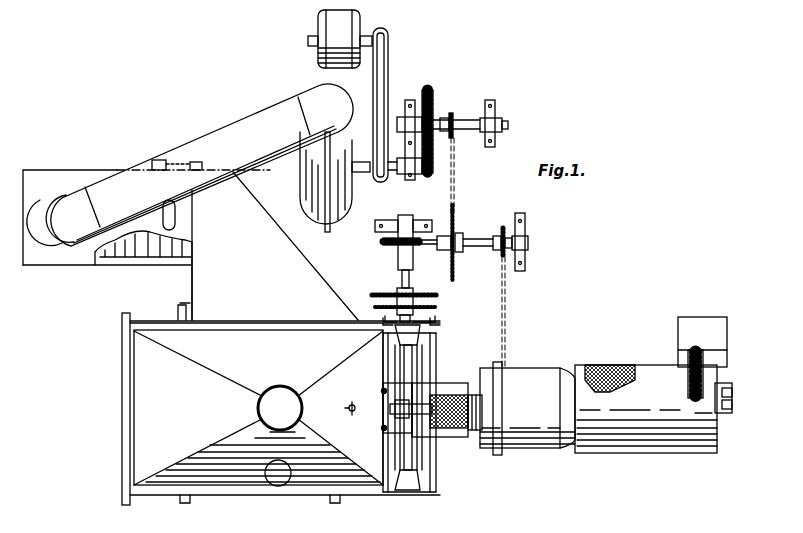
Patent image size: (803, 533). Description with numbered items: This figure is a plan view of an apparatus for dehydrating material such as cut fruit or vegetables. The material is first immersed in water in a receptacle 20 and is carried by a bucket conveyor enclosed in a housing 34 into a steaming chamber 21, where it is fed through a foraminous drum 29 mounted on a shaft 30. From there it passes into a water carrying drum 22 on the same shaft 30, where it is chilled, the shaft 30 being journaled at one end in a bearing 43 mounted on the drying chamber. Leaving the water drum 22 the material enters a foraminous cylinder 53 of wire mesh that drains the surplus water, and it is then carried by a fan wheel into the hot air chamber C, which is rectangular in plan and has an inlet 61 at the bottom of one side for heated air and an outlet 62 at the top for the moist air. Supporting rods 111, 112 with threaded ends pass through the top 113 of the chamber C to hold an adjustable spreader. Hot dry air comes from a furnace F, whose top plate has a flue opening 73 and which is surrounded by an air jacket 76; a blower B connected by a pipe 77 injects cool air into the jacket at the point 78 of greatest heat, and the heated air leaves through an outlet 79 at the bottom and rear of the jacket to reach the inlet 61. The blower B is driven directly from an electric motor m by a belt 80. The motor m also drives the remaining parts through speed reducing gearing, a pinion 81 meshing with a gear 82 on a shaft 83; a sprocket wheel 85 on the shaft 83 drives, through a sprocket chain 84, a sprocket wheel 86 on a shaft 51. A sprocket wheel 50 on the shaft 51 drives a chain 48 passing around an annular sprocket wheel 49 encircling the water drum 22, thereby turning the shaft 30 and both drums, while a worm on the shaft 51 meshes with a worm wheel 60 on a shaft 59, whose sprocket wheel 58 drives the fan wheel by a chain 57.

The pipe 77 is at (236, 128).
The jacket connection point 78 is at (50, 244).
The opening 73 is at (178, 218).
The jacket 76 is at (128, 266).
The outlet 79 is at (203, 262).
The furnace F is at (70, 255).
The electric motor m is at (313, 30).
The blower B is at (318, 160).
The belt 80 is at (389, 72).
The pinion 81 is at (424, 172).
The gear 82 is at (436, 120).
The shaft 83 is at (472, 130).
The sprocket wheel 85 is at (456, 118).
The sprocket chain 84 is at (455, 215).
The sprocket wheel 86 is at (455, 258).
The worm wheel 60 is at (383, 242).
The shaft 59 is at (402, 276).
The shaft 51 is at (477, 240).
The sprocket wheel 50 is at (501, 233).
The chain 48 is at (507, 331).
The sprocket wheel 58 is at (426, 311).
The chain 57 is at (365, 320).
The hot air chamber C is at (209, 490).
The inlet 61 is at (254, 320).
The outlet 62 is at (266, 408).
The supporting rod 112 is at (333, 409).
The supporting rod 111 is at (382, 391).
The top 113 is at (382, 428).
The bearing 43 is at (410, 418).
The shaft 30 is at (416, 420).
The foraminous cylinder 53 is at (450, 392).
The annular sprocket wheel 49 is at (492, 363).
The water carrying drum 22 is at (527, 408).
The steaming chamber 21 is at (660, 446).
The foraminous drum 29 is at (604, 366).
The receptacle 20 is at (705, 348).
The housing 34 is at (705, 358).